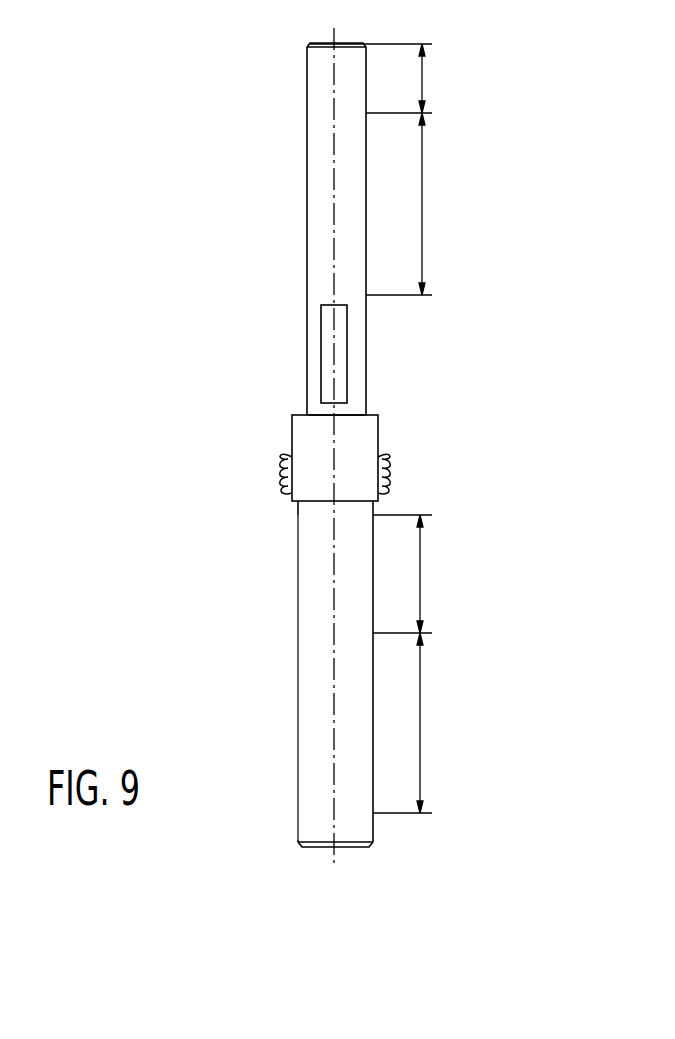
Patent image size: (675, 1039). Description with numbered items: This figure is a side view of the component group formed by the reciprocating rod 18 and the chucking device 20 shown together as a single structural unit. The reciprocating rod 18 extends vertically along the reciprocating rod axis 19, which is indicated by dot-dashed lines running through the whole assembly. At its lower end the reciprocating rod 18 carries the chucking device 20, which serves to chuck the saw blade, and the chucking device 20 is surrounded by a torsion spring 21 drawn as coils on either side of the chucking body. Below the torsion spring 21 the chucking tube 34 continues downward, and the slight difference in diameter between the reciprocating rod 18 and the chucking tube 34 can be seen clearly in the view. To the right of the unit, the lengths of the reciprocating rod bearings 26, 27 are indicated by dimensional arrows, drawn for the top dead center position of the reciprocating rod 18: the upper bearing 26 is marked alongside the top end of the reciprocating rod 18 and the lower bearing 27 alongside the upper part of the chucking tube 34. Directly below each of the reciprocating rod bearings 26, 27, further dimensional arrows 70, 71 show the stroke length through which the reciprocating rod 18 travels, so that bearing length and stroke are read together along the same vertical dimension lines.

The reciprocating rod 18 is at (458, 221).
The reciprocating rod axis 19 is at (334, 160).
The chucking device 20 is at (235, 572).
The torsion spring 21 is at (395, 459).
The reciprocating rod bearing 26 is at (422, 80).
The reciprocating rod bearing 27 is at (420, 580).
The chucking tube 34 is at (298, 712).
The dimensional arrow 70 is at (422, 195).
The dimensional arrow 71 is at (420, 718).